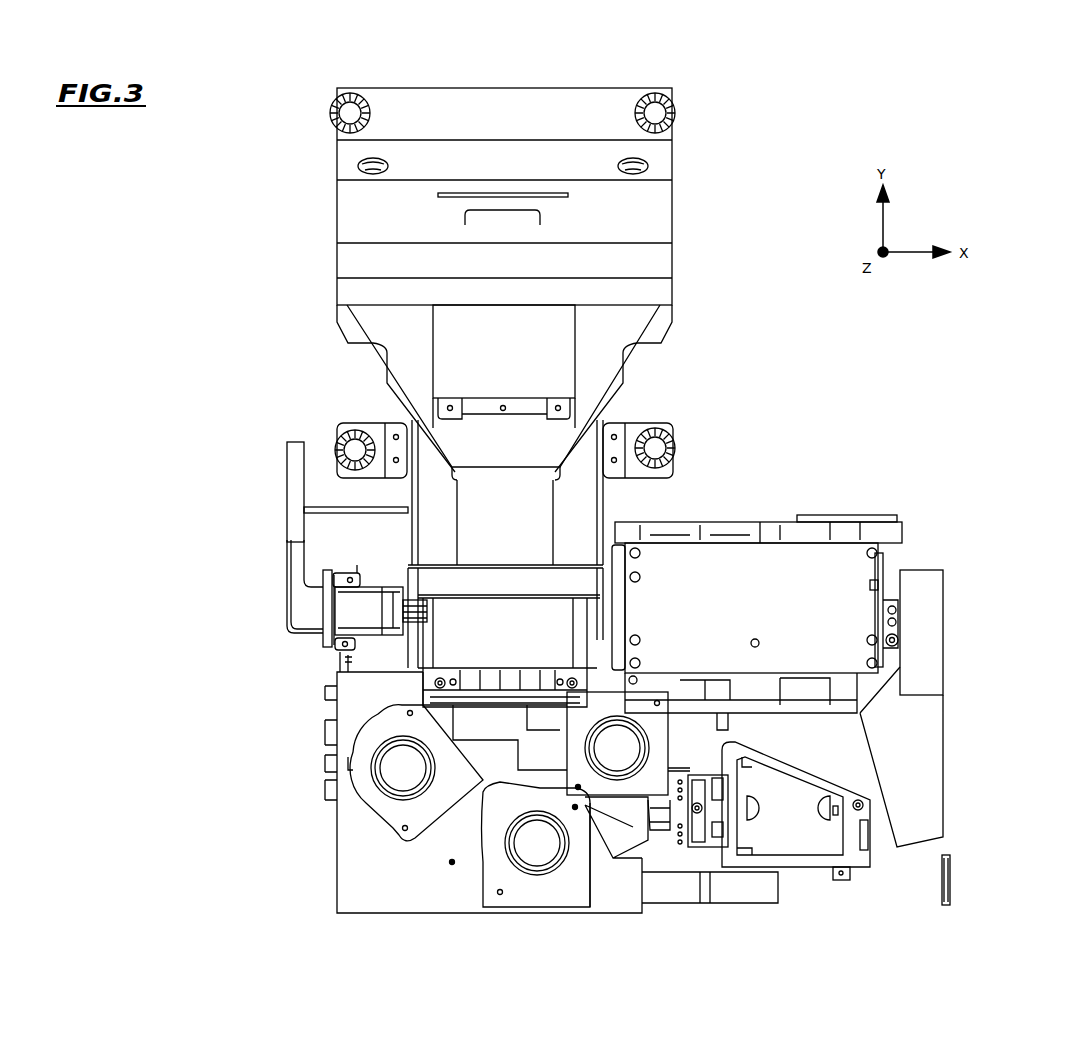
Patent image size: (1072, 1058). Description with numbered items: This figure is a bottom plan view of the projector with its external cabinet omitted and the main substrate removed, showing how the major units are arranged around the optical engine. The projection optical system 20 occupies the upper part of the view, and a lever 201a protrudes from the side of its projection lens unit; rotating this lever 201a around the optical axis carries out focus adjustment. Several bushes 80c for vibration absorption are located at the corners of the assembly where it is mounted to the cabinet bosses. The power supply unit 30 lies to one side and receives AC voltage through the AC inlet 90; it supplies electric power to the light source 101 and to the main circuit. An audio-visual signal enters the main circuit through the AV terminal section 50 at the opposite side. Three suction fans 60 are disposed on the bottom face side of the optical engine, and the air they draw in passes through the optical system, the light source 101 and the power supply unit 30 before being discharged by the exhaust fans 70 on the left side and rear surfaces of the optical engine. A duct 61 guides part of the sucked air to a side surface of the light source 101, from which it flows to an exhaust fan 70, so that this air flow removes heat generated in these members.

The projection optical system 20 is at (588, 328).
The bush for vibration absorption 80c is at (331, 115).
The lever 201a is at (327, 503).
The AC inlet 90 is at (347, 612).
The AV terminal section 50 is at (317, 727).
The suction fan 60 is at (641, 705).
The power supply unit 30 is at (695, 567).
The exhaust fan 70 is at (858, 530).
The light source 101 is at (795, 855).
The duct 61 is at (738, 880).